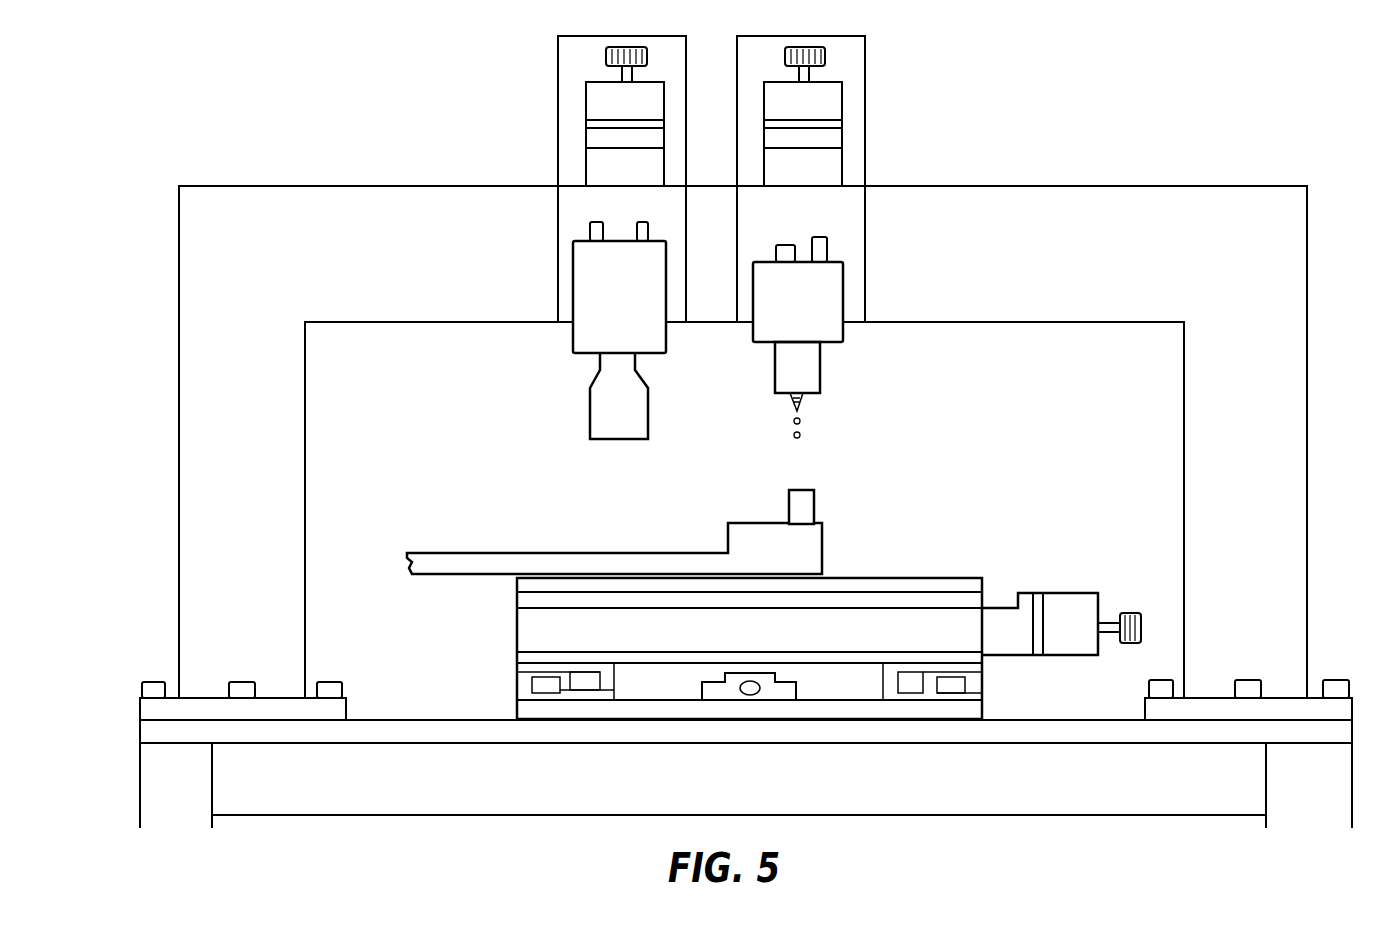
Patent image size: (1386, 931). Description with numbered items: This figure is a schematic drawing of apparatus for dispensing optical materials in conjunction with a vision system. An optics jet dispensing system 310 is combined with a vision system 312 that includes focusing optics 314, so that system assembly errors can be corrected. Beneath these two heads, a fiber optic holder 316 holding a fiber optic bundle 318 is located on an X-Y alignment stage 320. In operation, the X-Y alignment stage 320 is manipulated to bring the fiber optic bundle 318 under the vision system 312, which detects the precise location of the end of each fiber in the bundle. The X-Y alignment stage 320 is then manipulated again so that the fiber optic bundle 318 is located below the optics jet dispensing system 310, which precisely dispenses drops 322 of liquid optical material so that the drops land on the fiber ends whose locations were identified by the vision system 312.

The optics jet dispensing system 310 is at (866, 254).
The vision system 312 is at (556, 257).
The focusing optics 314 is at (597, 411).
The fiber optic holder 316 is at (824, 556).
The fiber optic bundle 318 is at (816, 505).
The X-Y alignment stage 320 is at (517, 636).
The drops 322 is at (801, 420).